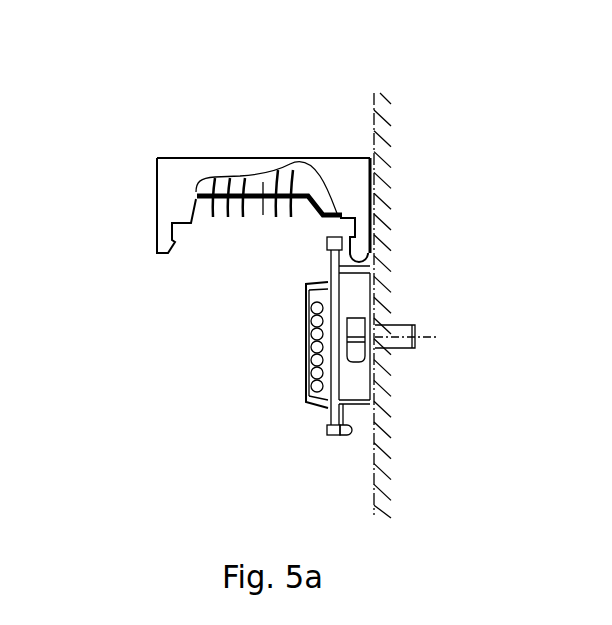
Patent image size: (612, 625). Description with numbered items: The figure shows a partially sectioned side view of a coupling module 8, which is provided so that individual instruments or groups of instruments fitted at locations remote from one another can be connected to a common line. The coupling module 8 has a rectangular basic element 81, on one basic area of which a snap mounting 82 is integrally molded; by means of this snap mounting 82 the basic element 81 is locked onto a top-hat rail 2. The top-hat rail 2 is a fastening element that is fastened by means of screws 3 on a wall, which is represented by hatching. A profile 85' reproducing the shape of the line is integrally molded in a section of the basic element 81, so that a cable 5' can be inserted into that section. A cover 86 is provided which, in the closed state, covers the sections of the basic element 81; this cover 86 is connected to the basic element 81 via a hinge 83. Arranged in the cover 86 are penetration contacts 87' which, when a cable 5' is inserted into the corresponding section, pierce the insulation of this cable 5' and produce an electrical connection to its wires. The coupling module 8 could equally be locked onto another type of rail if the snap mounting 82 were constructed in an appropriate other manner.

The coupling module 8 is at (143, 72).
The cover 86 is at (168, 207).
The penetration contact 87' is at (267, 125).
The hinge 83 is at (374, 260).
The snap mounting 82 is at (338, 240).
The top-hat rail 2 is at (375, 306).
The basic element 81 is at (336, 363).
The screw 3 is at (405, 345).
The cable 5' is at (216, 357).
The profile 85' is at (212, 391).